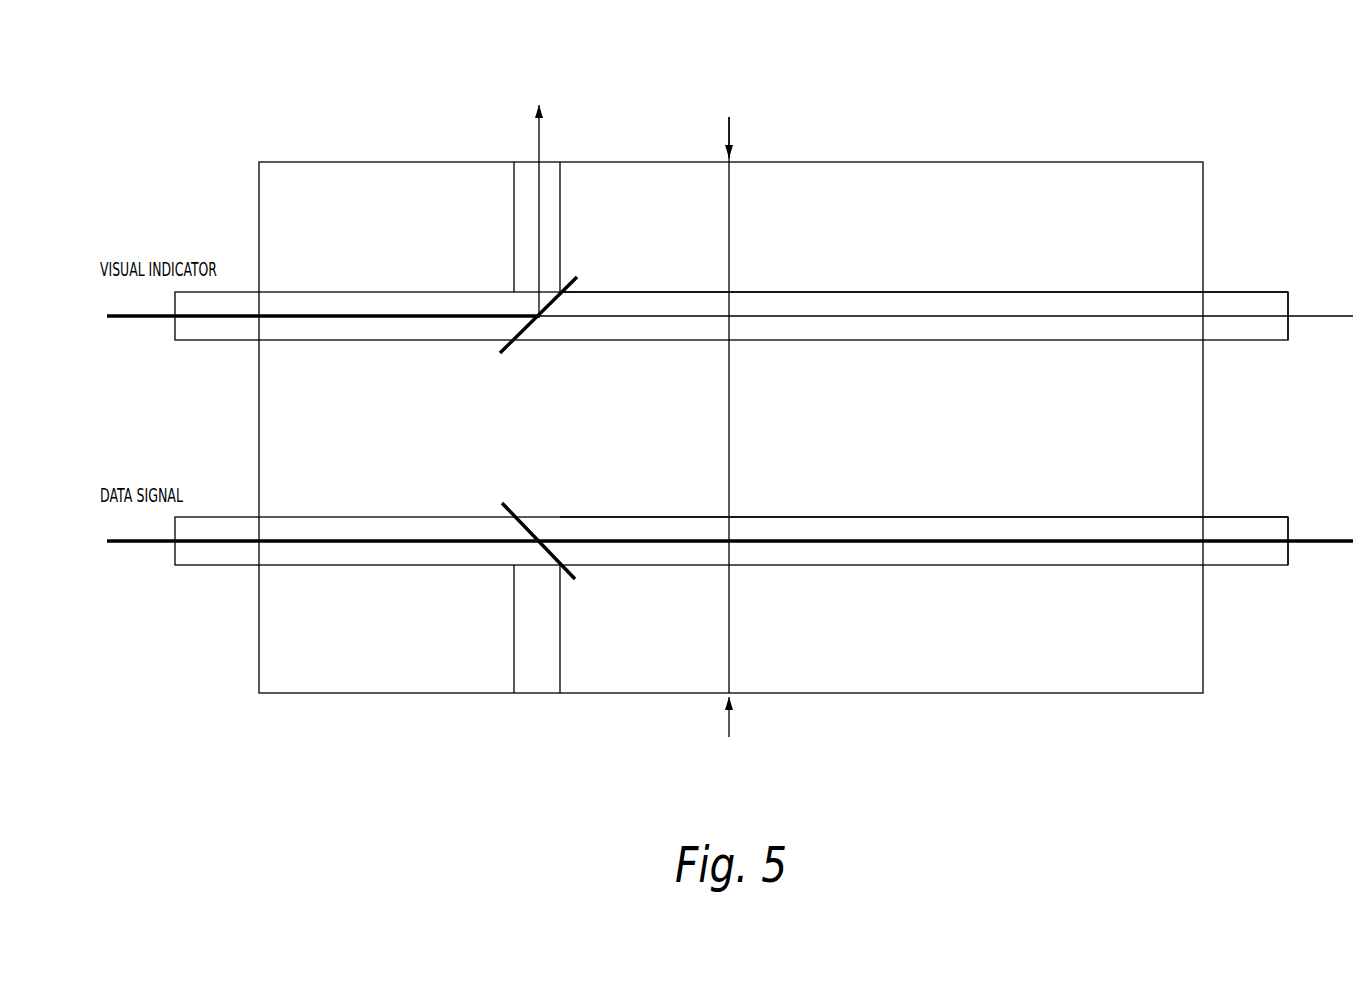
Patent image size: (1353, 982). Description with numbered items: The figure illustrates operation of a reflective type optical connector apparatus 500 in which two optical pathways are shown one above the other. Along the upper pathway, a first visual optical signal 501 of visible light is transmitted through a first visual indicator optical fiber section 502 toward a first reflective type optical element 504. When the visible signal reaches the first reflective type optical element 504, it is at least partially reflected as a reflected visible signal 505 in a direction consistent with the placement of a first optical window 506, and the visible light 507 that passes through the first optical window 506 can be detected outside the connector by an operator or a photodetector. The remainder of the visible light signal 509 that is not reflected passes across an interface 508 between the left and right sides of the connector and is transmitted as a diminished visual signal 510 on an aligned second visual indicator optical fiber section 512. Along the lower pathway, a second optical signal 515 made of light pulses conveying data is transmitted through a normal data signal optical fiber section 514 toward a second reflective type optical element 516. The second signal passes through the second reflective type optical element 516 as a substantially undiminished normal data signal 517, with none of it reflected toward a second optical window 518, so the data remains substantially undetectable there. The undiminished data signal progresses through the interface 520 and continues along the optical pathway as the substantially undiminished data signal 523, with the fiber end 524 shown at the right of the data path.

The optical connector apparatus 500 is at (248, 100).
The first visual optical signal 501 is at (137, 318).
The first visual indicator optical fiber section 502 is at (178, 347).
The first reflective type optical element 504 is at (552, 303).
The reflected visible signal 505 is at (538, 203).
The first optical window 506 is at (522, 158).
The visible light passed through first optical window 507 is at (548, 117).
The interface 508 is at (731, 391).
The remainder of visible light signal 509 is at (648, 310).
The diminished visual signal 510 is at (955, 310).
The second visual indicator optical fiber section 512 is at (1282, 287).
The normal data signal optical fiber section 514 is at (180, 572).
The second optical signal 515 is at (136, 543).
The second reflective type optical element 516 is at (533, 528).
The substantially undiminished normal data signal 517 is at (650, 538).
The second optical window 518 is at (522, 697).
The interface 520 is at (732, 732).
The substantially undiminished data signal 523 is at (955, 538).
The data band end 524 is at (1282, 515).